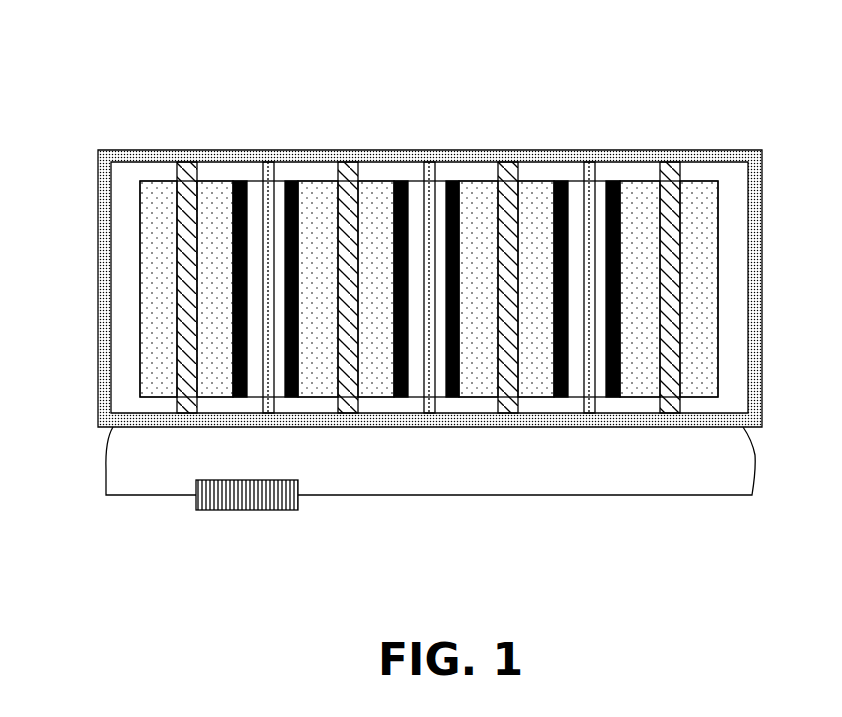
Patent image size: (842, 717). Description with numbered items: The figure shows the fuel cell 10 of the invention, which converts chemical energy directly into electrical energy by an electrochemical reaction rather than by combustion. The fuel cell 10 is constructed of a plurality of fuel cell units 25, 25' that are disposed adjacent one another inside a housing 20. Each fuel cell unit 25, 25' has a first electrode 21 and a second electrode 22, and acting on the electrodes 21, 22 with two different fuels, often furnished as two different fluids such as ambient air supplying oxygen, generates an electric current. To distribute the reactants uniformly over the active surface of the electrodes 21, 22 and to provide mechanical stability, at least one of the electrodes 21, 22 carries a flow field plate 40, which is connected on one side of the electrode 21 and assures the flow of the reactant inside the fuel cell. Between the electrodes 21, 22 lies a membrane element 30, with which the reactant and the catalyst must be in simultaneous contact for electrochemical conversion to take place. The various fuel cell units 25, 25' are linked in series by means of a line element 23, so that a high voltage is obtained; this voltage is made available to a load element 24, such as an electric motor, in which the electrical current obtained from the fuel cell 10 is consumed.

The fuel cell 10 is at (100, 125).
The housing 20 is at (218, 157).
The first electrode 21 is at (327, 188).
The second electrode 22 is at (370, 187).
The line element 23 is at (113, 438).
The load element 24 is at (223, 505).
The fuel cell unit 25 is at (671, 252).
The fuel cell unit 25' is at (509, 253).
The membrane element 30 is at (277, 368).
The flow field plate 40 is at (230, 188).